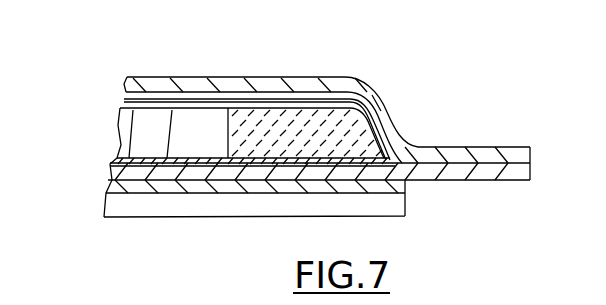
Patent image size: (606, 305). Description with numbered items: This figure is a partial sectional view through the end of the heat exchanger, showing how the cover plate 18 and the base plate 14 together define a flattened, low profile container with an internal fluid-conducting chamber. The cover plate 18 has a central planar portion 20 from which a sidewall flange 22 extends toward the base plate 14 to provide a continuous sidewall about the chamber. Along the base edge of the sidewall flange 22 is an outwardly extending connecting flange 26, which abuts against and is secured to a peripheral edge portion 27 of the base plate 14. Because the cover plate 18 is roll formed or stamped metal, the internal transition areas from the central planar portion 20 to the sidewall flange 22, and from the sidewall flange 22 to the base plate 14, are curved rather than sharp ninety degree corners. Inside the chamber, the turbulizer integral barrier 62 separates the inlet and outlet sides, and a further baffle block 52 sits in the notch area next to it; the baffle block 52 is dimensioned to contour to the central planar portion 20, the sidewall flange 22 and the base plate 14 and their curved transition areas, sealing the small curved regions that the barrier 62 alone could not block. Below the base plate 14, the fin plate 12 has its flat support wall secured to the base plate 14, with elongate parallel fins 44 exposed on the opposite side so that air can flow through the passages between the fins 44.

The fin plate 12 is at (400, 183).
The base plate 14 is at (485, 172).
The cover plate 18 is at (345, 77).
The central planar portion 20 is at (288, 77).
The sidewall flange 22 is at (393, 127).
The connecting flange 26 is at (478, 147).
The peripheral edge portion 27 is at (532, 166).
The fins 44 is at (183, 196).
The baffle block 52 is at (237, 117).
The barrier 62 is at (170, 128).